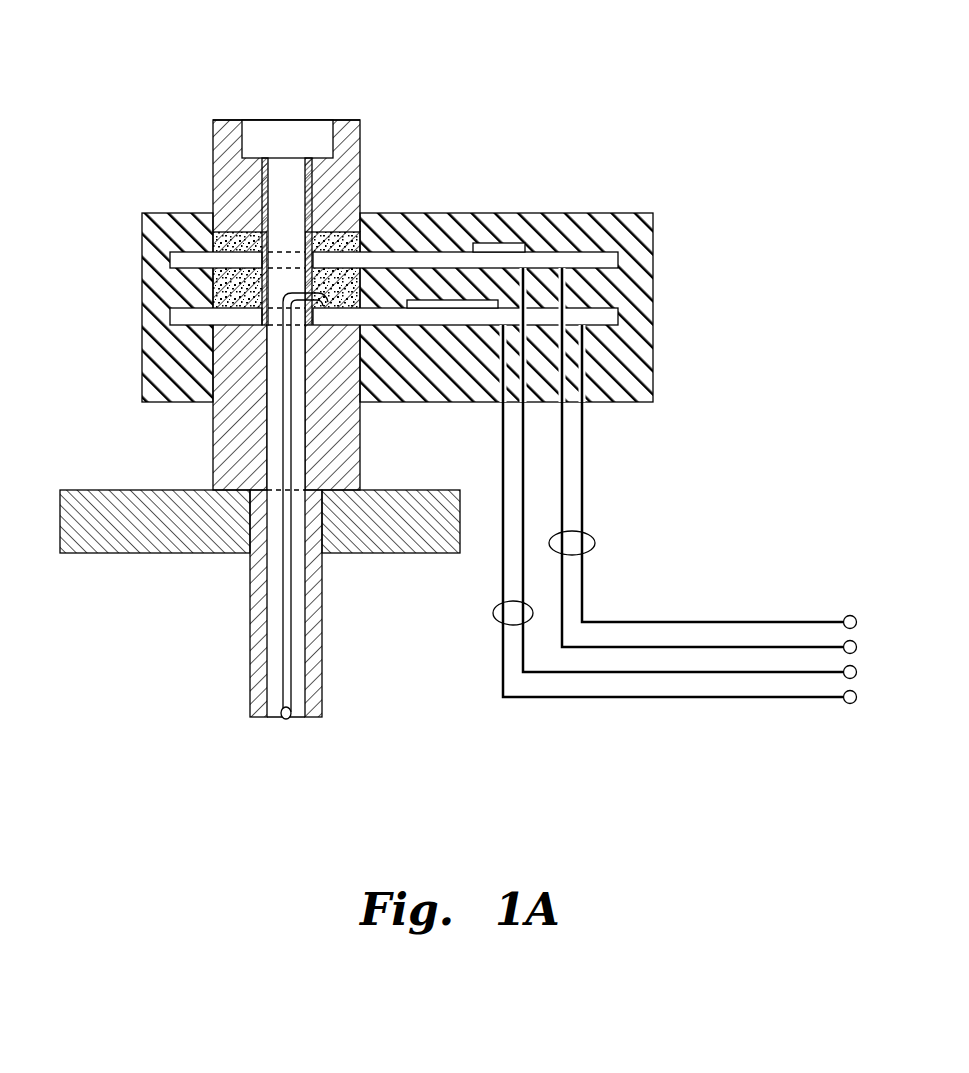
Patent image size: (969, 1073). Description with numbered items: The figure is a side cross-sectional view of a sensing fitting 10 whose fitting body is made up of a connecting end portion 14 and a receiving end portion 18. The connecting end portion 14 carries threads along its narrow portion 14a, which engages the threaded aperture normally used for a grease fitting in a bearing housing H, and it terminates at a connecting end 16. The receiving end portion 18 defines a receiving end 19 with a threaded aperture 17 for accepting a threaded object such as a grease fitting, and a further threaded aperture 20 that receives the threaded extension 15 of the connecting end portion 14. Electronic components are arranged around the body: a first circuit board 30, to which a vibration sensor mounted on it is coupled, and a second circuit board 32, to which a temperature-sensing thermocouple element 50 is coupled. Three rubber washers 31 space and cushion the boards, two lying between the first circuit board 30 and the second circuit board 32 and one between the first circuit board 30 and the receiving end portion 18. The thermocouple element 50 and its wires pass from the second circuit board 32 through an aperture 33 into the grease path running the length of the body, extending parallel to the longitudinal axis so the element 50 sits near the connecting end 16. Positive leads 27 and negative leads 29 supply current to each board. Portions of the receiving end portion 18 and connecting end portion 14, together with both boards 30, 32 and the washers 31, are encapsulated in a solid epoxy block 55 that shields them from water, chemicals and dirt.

The sensing fitting 10 is at (181, 162).
The connecting end portion 14 is at (235, 452).
The narrow portion 14a is at (250, 628).
The threaded extension 15 is at (287, 158).
The connecting end 16 is at (310, 718).
The threaded aperture 17 is at (255, 135).
The receiving end portion 18 is at (345, 153).
The receiving end 19 is at (345, 120).
The threaded aperture 20 is at (302, 178).
The positive leads 27 is at (595, 540).
The negative leads 29 is at (495, 618).
The first circuit board 30 is at (608, 261).
The rubber washers 31 is at (226, 210).
The second circuit board 32 is at (608, 314).
The aperture 33 is at (328, 305).
The thermocouple element 50 is at (285, 722).
The solid epoxy block 55 is at (600, 232).
The bearing housing H is at (85, 505).